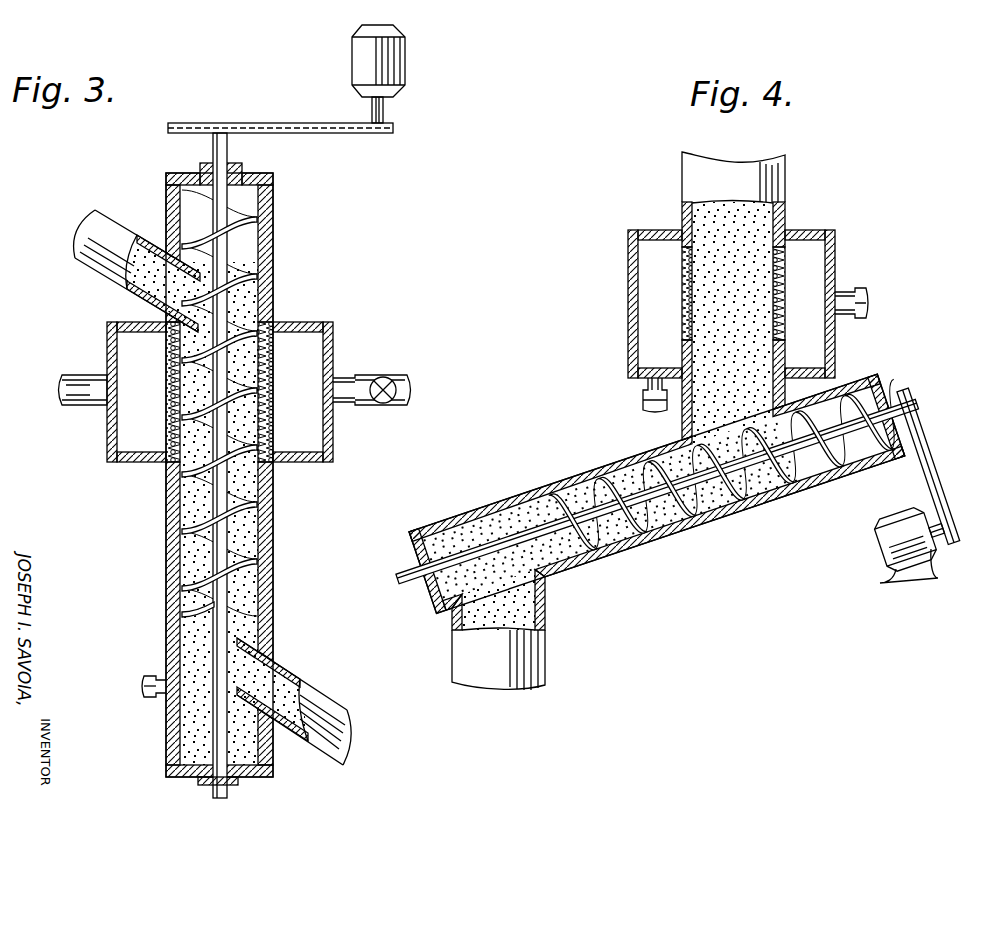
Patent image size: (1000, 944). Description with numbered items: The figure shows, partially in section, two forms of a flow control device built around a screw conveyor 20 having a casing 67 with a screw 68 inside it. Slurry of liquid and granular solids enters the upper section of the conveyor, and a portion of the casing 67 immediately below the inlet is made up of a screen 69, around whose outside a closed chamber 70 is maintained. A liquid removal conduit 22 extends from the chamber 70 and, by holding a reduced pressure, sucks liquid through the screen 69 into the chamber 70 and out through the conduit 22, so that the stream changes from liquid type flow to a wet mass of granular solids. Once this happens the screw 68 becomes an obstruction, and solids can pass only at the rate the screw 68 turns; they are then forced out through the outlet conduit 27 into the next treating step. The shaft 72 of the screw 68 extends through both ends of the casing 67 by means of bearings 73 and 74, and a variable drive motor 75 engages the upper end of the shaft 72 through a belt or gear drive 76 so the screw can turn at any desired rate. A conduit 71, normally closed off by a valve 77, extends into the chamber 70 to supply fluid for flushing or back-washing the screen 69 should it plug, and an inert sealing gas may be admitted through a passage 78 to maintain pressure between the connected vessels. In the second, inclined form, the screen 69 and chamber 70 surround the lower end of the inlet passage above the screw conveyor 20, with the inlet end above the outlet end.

In FIG. 3, the screw conveyor 20 is at (172, 530).
In FIG. 4, the screw conveyor 20 is at (526, 494).
In FIG. 3, the liquid removal conduit 22 is at (74, 375).
In FIG. 4, the liquid removal conduit 22 is at (650, 400).
In FIG. 3, the outlet conduit 27 is at (100, 245).
In FIG. 4, the outlet conduit 27 is at (772, 180).
In FIG. 3, the casing 67 is at (268, 507).
In FIG. 4, the casing 67 is at (594, 468).
In FIG. 3, the screw 68 is at (213, 465).
In FIG. 3, the screen 69 is at (263, 383).
In FIG. 4, the screen 69 is at (683, 301).
In FIG. 3, the closed chamber 70 is at (335, 330).
In FIG. 4, the closed chamber 70 is at (662, 230).
In FIG. 3, the fluid supply conduit 71 is at (345, 377).
In FIG. 4, the fluid supply conduit 71 is at (862, 292).
In FIG. 3, the shaft 72 is at (214, 737).
In FIG. 3, the bearing 73 is at (205, 779).
In FIG. 3, the bearing 74 is at (166, 173).
In FIG. 3, the variable drive motor 75 is at (406, 63).
In FIG. 3, the belt or gear drive 76 is at (311, 122).
In FIG. 3, the valve 77 is at (390, 379).
In FIG. 3, the sealing gas passage 78 is at (144, 681).